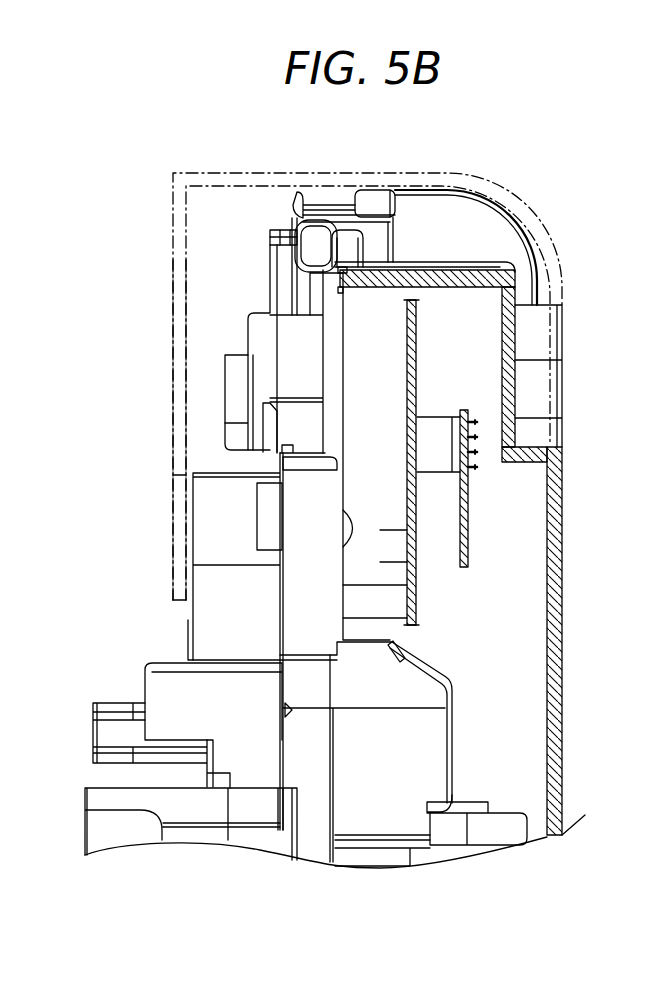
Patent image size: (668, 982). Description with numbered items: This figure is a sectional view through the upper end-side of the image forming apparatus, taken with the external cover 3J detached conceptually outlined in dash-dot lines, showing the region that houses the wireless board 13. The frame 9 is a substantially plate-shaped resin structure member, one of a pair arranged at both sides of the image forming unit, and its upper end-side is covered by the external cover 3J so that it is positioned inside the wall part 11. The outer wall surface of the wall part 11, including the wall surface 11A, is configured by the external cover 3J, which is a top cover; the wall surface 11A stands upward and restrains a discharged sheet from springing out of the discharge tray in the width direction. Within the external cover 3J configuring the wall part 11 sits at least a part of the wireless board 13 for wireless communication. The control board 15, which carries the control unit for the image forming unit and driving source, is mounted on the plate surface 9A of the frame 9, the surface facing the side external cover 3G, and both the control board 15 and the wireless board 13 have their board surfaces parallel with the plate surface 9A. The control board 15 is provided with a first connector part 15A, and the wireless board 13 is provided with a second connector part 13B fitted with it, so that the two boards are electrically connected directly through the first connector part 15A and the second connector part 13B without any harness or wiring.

The external cover 3G is at (565, 771).
The external cover 3J is at (539, 181).
The frame 9 is at (218, 392).
The plate surface 9A is at (350, 527).
The wall part 11 is at (268, 170).
The wall surface 11A is at (175, 290).
The wireless board 13 is at (470, 517).
The second connector part 13B is at (462, 410).
The control board 15 is at (418, 594).
The first connector part 15A is at (431, 422).